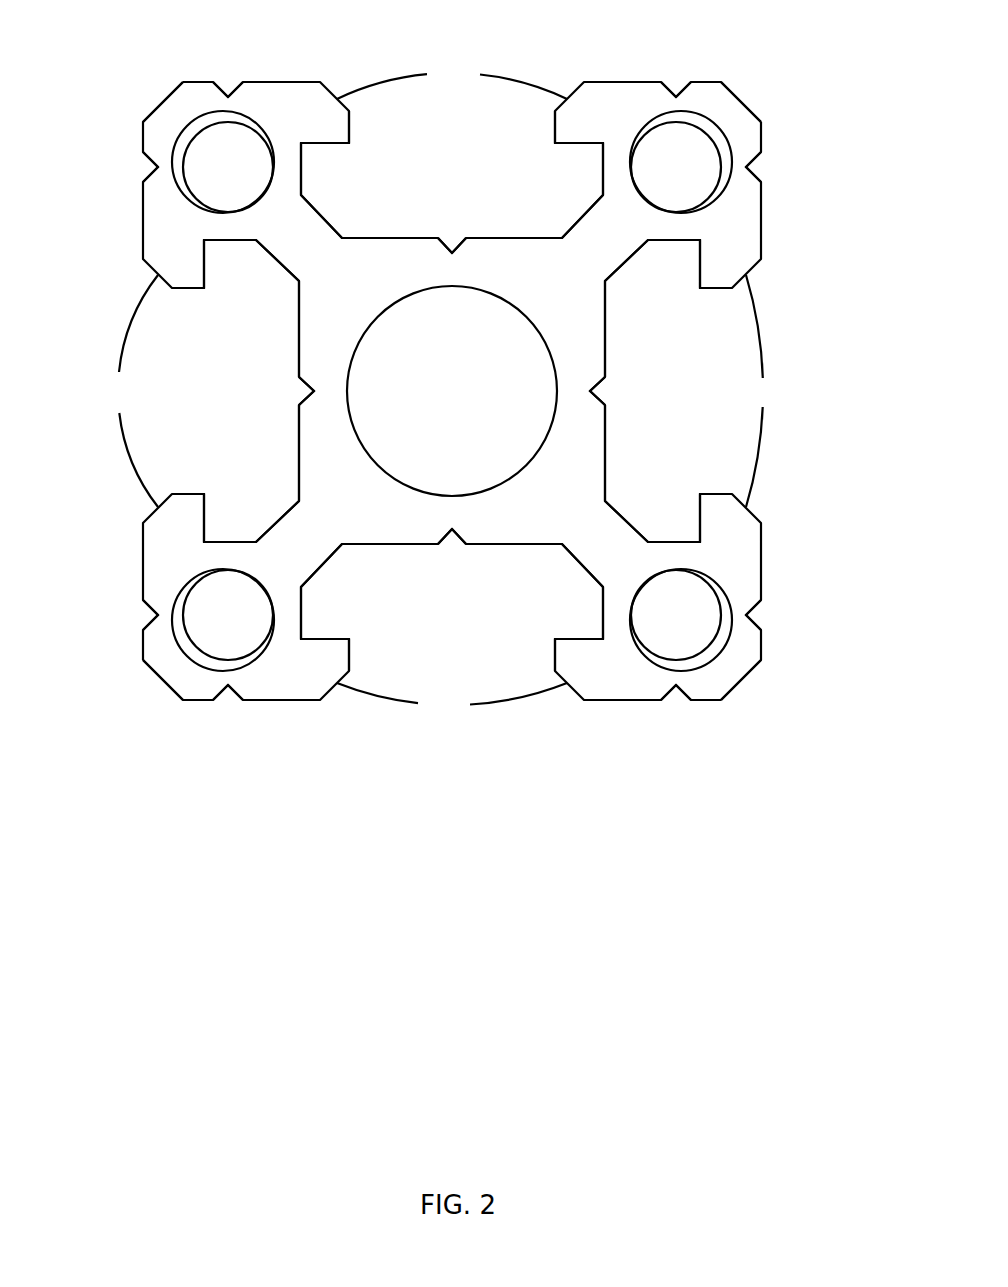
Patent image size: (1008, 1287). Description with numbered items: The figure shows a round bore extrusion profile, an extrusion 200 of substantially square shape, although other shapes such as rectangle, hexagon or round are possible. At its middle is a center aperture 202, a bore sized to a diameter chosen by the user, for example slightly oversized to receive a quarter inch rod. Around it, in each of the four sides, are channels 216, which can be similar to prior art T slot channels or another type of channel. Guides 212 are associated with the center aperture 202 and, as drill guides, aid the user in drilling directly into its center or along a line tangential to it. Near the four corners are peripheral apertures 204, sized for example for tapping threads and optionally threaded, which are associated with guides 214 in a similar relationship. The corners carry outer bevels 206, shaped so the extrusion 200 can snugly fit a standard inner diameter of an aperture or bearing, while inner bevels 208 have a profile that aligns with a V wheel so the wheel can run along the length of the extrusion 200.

The extrusion 200 is at (180, 529).
The center aperture 202 is at (452, 391).
The peripheral apertures 204 is at (452, 391).
The outer bevels 206 is at (462, 377).
The inner bevels 208 is at (438, 389).
The guides 212 is at (444, 396).
The guides 214 is at (441, 393).
The channels 216 is at (452, 391).